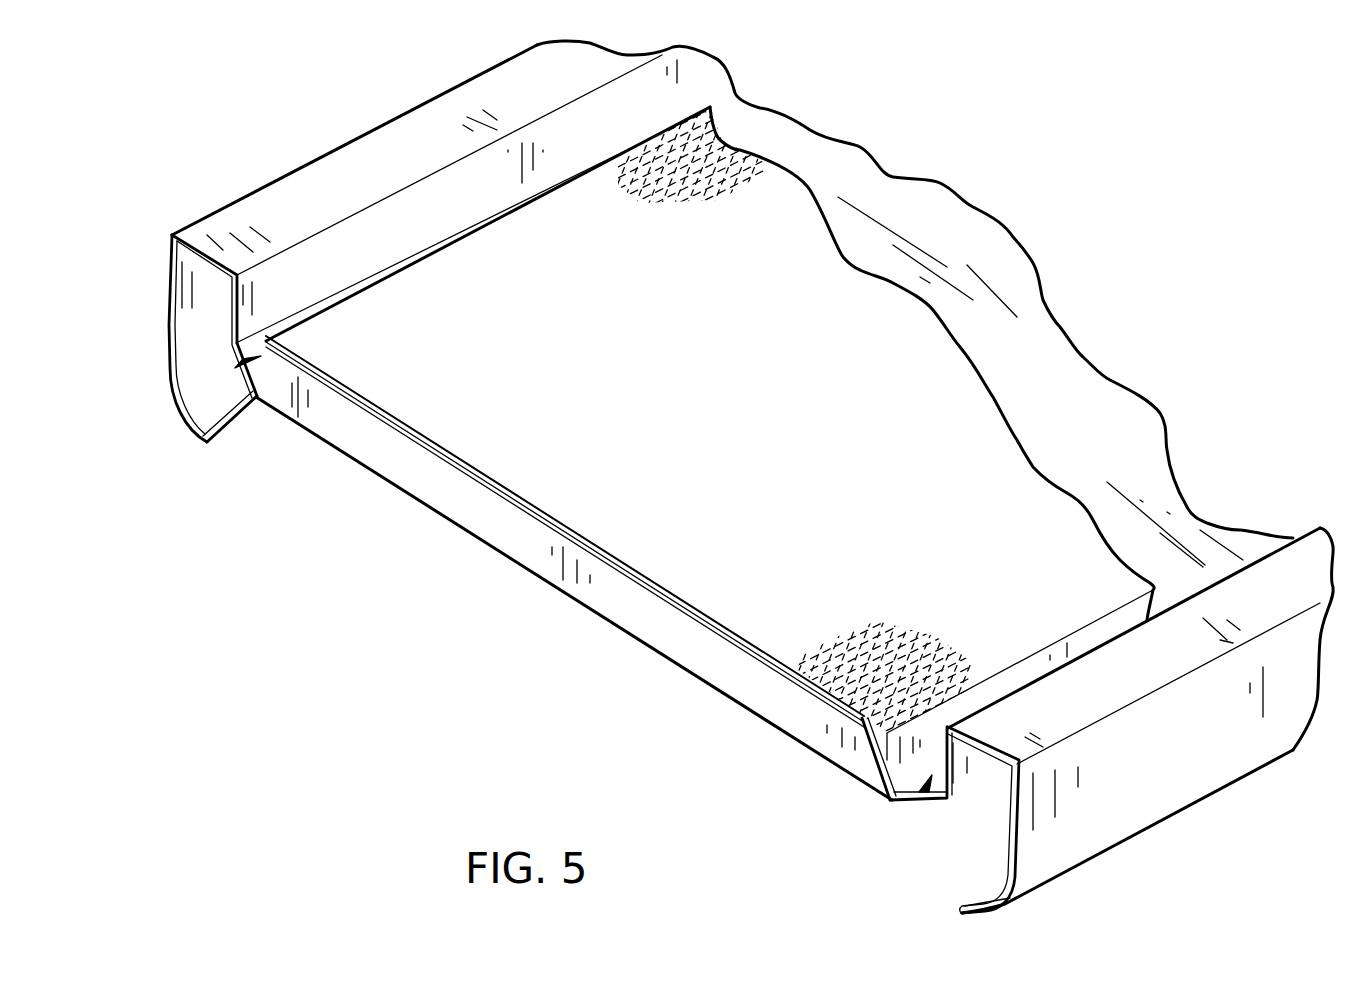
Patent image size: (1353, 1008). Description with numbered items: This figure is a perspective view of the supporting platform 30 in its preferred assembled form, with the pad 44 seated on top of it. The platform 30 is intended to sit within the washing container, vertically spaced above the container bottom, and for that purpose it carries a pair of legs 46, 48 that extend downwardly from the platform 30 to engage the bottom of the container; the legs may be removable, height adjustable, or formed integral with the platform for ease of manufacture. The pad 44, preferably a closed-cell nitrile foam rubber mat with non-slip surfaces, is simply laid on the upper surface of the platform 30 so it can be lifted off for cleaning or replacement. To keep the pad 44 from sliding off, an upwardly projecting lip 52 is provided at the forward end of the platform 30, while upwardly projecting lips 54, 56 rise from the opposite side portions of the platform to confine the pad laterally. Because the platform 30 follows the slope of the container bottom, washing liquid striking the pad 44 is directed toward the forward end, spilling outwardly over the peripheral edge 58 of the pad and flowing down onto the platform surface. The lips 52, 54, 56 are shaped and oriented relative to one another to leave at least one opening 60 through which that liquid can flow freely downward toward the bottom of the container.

The supporting platform 30 is at (668, 678).
The pad 44 is at (490, 413).
The leg 46 is at (990, 913).
The leg 48 is at (240, 427).
The upwardly projecting lip 52 is at (510, 525).
The upwardly projecting lip 54 is at (382, 238).
The upwardly projecting lip 56 is at (963, 778).
The peripheral edge 58 is at (908, 742).
The opening 60 is at (232, 367).